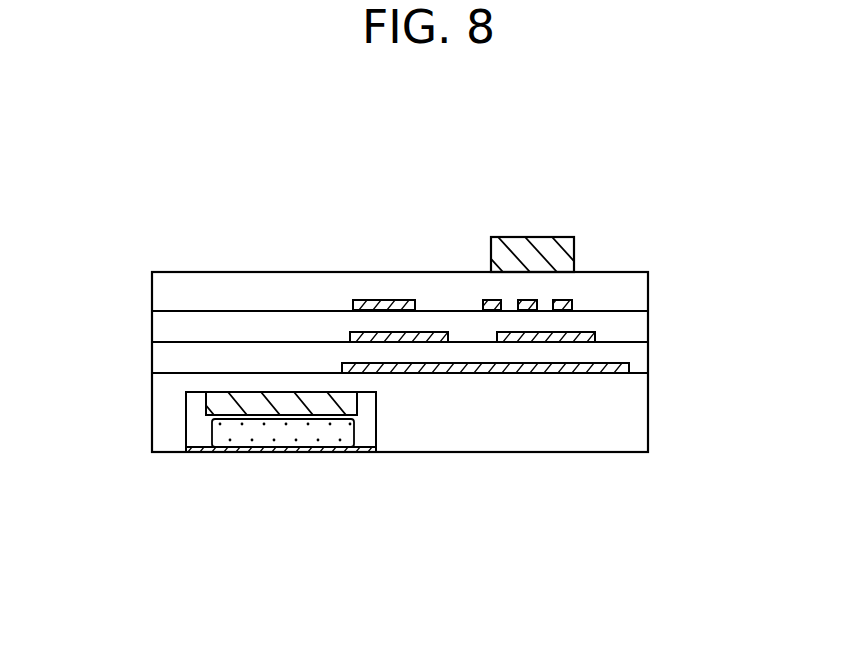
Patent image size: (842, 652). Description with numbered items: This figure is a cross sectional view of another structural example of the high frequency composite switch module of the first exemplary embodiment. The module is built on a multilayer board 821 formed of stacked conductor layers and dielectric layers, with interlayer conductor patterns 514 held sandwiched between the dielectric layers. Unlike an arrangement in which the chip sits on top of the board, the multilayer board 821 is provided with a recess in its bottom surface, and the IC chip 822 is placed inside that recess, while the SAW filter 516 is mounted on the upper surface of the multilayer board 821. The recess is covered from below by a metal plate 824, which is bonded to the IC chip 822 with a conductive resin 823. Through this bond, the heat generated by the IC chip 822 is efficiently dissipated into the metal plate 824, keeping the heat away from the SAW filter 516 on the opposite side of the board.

The multilayer board 821 is at (138, 273).
The SAW filter 516 is at (538, 242).
The interlayer conductor patterns 514 is at (629, 364).
The IC chip 822 is at (355, 400).
The conductive resin 823 is at (357, 452).
The metal plate 824 is at (280, 453).